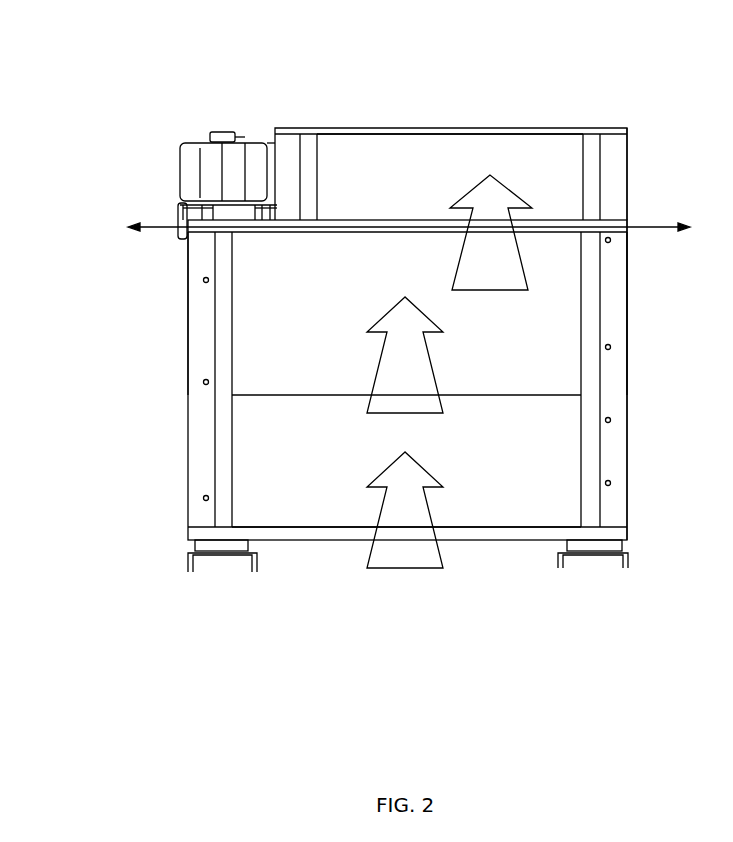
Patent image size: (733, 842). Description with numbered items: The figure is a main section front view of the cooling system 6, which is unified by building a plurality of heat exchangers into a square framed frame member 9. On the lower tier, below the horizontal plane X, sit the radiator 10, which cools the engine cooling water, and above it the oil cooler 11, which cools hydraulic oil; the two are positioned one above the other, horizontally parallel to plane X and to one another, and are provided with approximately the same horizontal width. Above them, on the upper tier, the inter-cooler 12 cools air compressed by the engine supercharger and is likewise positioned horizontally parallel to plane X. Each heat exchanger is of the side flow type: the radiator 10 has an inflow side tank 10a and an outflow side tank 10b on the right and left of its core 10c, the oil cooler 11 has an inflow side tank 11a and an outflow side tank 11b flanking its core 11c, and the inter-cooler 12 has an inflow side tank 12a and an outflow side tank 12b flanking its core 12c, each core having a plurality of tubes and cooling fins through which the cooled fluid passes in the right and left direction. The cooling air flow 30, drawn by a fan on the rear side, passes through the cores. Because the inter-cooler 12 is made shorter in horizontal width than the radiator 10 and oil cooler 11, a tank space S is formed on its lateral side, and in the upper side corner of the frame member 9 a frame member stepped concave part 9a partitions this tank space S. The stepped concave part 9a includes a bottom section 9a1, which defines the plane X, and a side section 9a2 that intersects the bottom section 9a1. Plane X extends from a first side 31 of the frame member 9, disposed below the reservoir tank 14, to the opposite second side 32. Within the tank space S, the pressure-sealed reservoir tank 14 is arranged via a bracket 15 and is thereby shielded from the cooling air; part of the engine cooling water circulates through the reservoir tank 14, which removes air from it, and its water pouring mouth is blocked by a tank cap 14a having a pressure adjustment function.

The cooling system 6 is at (367, 84).
The frame member 9 is at (615, 262).
The frame member stepped concave part 9a is at (172, 133).
The bottom section 9a1 is at (237, 217).
The side section 9a2 is at (272, 140).
The radiator 10 is at (409, 498).
The inflow side tank 10a is at (225, 459).
The outflow side tank 10b is at (590, 459).
The core 10c is at (487, 500).
The oil cooler 11 is at (409, 230).
The inflow side tank 11a is at (222, 350).
The outflow side tank 11b is at (590, 334).
The core 11c is at (440, 270).
The inter-cooler 12 is at (487, 142).
The inflow side tank 12a is at (307, 165).
The outflow side tank 12b is at (592, 177).
The core 12c is at (400, 152).
The reservoir tank 14 is at (201, 142).
The tank cap 14a is at (222, 130).
The bracket 15 is at (215, 202).
The cooling air flow 30 is at (490, 258).
The first side 31 is at (188, 292).
The second side 32 is at (628, 292).
The tank space S is at (245, 134).
The plane X is at (411, 225).